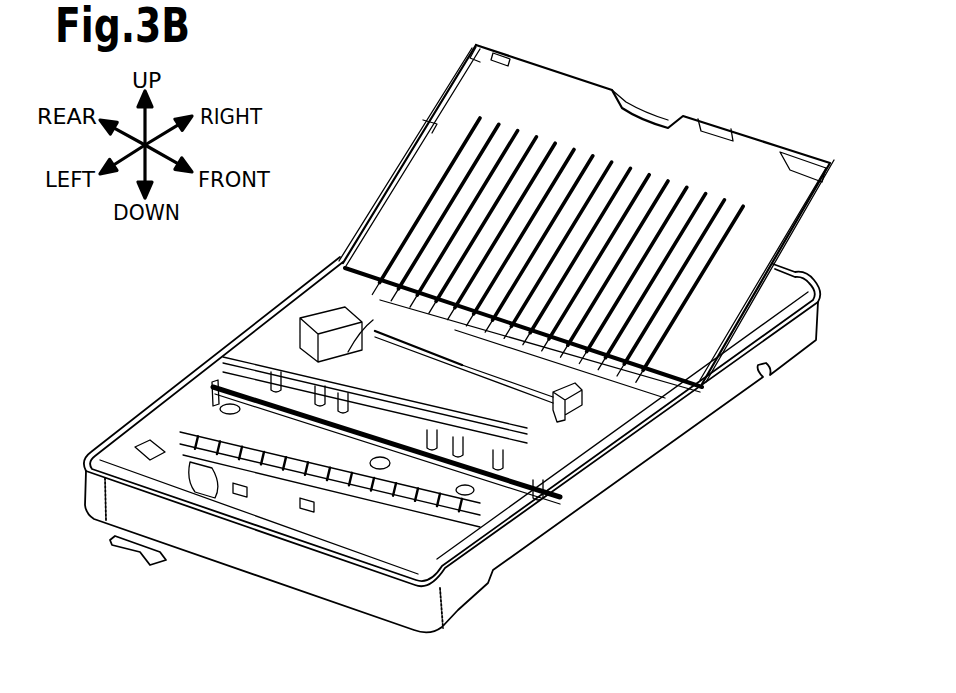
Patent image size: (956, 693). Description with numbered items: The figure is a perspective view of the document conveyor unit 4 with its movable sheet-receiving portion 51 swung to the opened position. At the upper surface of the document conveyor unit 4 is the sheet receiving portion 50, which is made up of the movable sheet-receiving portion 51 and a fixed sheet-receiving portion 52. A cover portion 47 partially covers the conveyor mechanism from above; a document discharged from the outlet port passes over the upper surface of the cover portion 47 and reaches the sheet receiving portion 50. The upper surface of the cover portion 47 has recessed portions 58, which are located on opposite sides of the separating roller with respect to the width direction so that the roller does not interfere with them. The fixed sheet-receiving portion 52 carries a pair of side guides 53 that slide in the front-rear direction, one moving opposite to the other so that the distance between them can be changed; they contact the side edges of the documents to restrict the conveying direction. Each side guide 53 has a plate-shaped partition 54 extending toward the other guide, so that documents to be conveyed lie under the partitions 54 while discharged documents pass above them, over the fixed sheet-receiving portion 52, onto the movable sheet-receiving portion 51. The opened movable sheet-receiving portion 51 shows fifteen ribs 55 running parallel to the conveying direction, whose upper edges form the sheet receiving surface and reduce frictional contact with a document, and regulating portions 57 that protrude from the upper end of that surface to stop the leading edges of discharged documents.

The document conveyor unit 4 is at (672, 478).
The cover portion 47 is at (210, 398).
The sheet receiving portion 50 is at (563, 195).
The movable sheet-receiving portion 51 is at (586, 193).
The fixed sheet-receiving portion 52 is at (343, 280).
The side guides 53 is at (325, 345).
The partition 54 is at (318, 305).
The ribs 55 is at (681, 195).
The regulating portions 57 is at (705, 115).
The recessed portions 58 is at (308, 418).